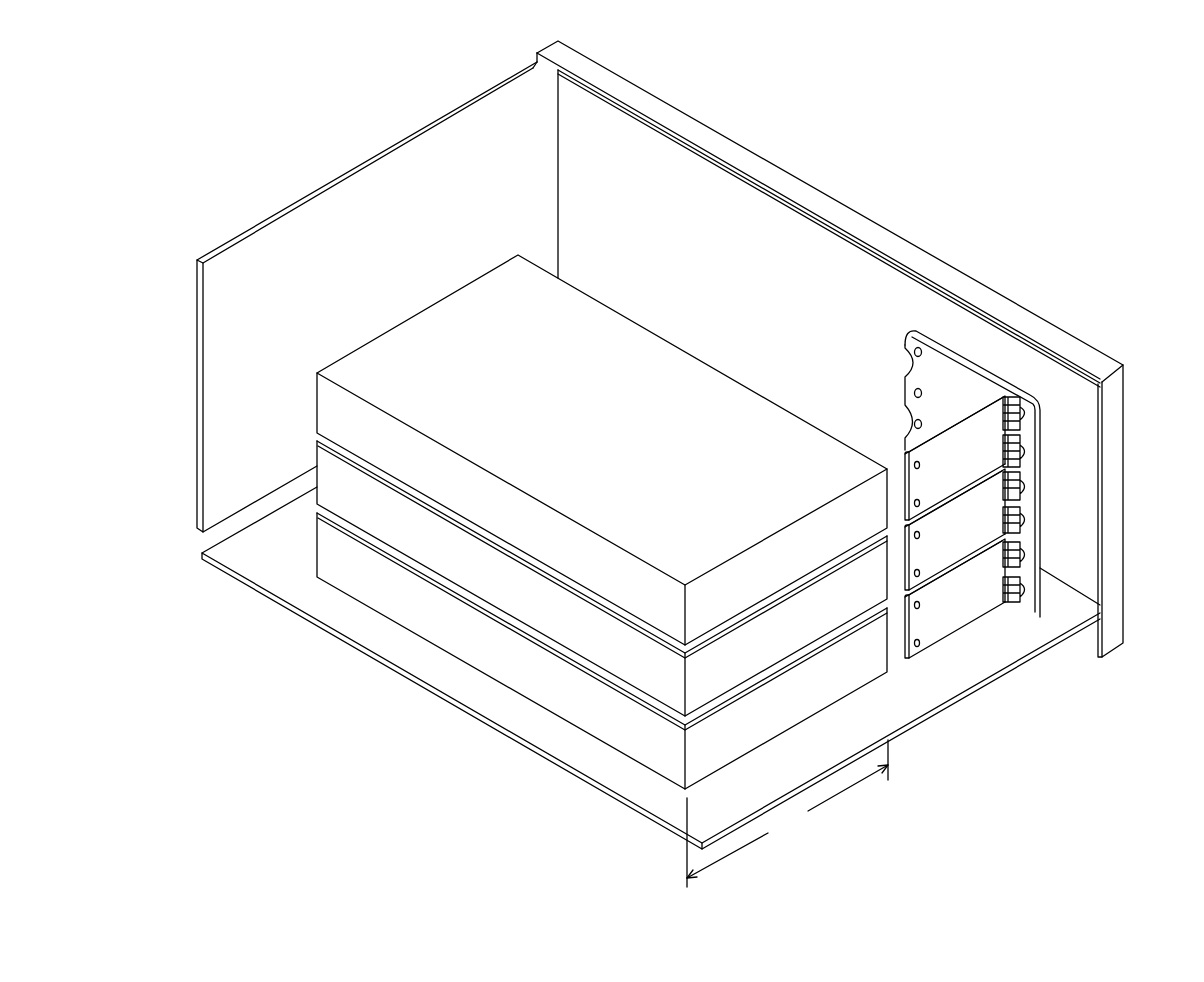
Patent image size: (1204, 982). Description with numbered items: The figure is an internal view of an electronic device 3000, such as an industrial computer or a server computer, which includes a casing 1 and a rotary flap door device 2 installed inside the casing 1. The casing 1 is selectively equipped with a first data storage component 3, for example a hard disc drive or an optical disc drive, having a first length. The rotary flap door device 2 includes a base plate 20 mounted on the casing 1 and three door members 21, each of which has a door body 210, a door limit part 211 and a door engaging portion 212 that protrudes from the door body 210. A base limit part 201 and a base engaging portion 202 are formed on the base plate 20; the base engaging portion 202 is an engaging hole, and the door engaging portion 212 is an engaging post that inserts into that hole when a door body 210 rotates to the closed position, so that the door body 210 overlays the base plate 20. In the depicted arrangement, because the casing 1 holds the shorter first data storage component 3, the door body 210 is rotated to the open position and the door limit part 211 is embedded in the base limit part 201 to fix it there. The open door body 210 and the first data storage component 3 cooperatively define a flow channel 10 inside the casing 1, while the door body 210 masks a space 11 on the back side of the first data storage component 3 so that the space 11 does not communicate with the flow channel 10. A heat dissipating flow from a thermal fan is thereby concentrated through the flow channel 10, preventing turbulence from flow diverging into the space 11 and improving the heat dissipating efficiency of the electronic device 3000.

The electronic device 3000 is at (1043, 127).
The casing 1 is at (956, 260).
The flow channel 10 is at (968, 634).
The space 11 is at (702, 215).
The rotary flap door device 2 is at (872, 337).
The base plate 20 is at (1018, 378).
The base limit part 201 is at (1013, 426).
The base engaging portion 202 is at (918, 348).
The door member 21 is at (897, 452).
The door body 210 is at (949, 445).
The door limit part 211 is at (1022, 458).
The door engaging portion 212 is at (903, 450).
The first data storage component 3 is at (370, 332).